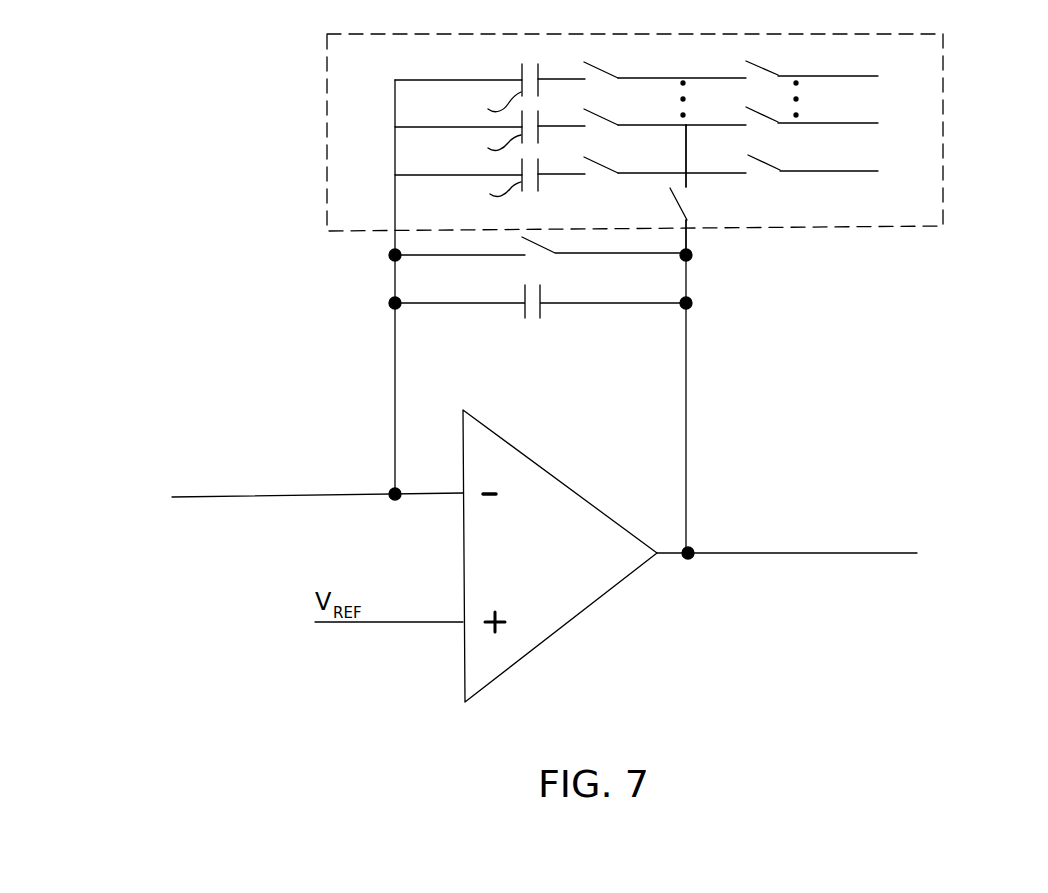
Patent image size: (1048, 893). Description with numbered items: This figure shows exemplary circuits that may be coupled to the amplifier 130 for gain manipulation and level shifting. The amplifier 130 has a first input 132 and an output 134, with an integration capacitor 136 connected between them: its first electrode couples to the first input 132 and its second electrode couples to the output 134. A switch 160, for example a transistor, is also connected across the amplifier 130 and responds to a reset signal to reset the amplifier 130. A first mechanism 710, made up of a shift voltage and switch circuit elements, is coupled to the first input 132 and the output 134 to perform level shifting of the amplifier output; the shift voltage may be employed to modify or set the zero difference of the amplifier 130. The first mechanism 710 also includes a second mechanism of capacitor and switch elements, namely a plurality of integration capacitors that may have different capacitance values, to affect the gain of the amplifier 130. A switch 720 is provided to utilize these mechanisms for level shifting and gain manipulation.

The first mechanism 710 is at (943, 192).
The switch 720 is at (688, 202).
The switch 160 is at (543, 258).
The integration capacitor 136 is at (540, 318).
The amplifier 130 is at (562, 482).
The first input 132 is at (260, 495).
The output 134 is at (847, 548).